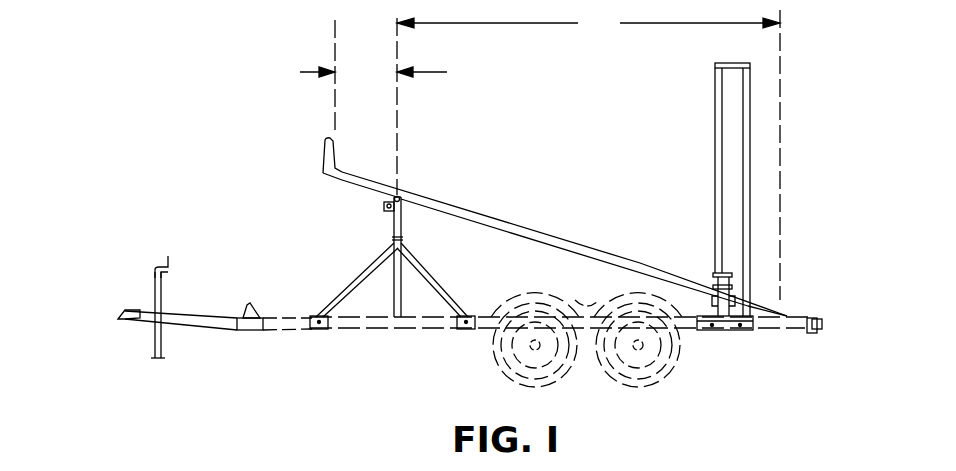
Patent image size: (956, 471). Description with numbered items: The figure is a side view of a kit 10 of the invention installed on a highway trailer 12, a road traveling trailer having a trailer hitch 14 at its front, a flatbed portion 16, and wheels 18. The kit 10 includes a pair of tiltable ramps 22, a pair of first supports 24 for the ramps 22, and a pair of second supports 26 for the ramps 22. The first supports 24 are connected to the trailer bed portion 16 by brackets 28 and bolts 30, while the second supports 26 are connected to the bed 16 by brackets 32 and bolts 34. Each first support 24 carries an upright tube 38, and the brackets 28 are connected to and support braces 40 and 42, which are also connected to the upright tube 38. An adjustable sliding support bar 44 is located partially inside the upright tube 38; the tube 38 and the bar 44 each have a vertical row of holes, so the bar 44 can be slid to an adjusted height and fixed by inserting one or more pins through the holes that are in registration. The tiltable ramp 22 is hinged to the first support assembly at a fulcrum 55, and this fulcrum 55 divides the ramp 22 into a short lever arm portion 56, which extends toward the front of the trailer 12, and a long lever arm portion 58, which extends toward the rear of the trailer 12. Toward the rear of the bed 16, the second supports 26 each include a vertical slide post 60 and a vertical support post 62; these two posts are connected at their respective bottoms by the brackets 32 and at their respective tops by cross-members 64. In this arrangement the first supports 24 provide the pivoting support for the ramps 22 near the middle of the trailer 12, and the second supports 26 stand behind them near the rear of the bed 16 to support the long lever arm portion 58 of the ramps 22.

The kit 10 is at (228, 92).
The highway trailer 12 is at (247, 339).
The trailer hitch 14 is at (132, 309).
The flatbed portion 16 is at (372, 330).
The wheels 18 is at (612, 368).
The tiltable ramps 22 is at (564, 240).
The first supports 24 is at (338, 251).
The second supports 26 is at (812, 203).
The brackets 28 is at (312, 330).
The bolts 30 is at (322, 330).
The brackets 32 is at (723, 332).
The bolts 34 is at (745, 332).
The upright tubes 38 is at (420, 292).
The brace 40 is at (352, 276).
The brace 42 is at (420, 272).
The adjustable sliding support bars 44 is at (393, 218).
The fulcrum 55 is at (408, 190).
The short lever arm portion 56 is at (373, 76).
The long lever arm portion 58 is at (588, 155).
The vertical slide post 60 is at (715, 82).
The vertical support post 62 is at (752, 80).
The cross-members 64 is at (736, 62).